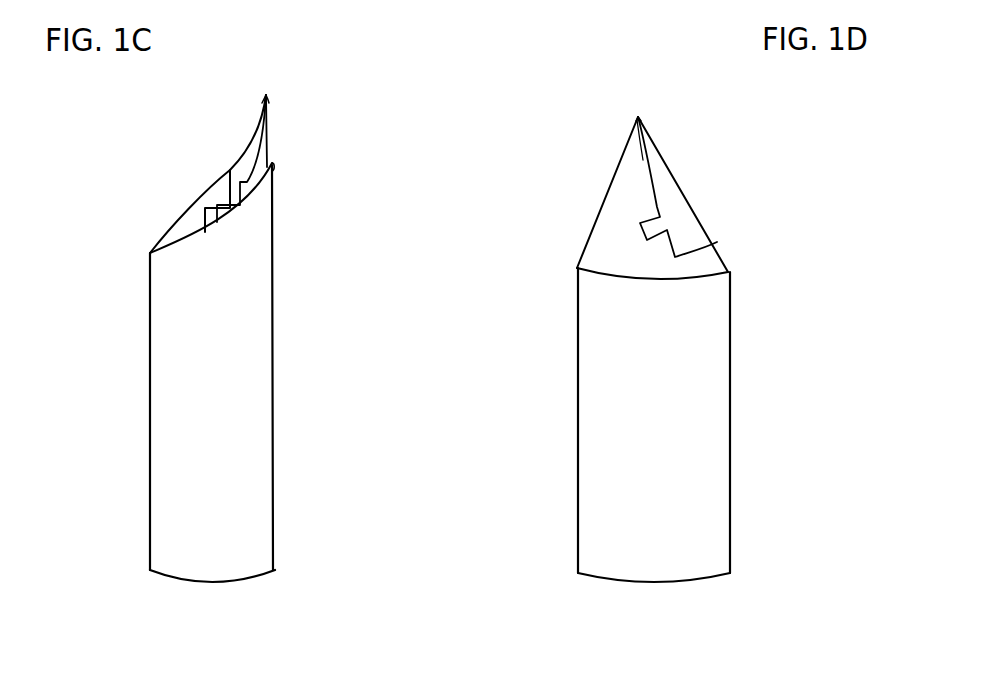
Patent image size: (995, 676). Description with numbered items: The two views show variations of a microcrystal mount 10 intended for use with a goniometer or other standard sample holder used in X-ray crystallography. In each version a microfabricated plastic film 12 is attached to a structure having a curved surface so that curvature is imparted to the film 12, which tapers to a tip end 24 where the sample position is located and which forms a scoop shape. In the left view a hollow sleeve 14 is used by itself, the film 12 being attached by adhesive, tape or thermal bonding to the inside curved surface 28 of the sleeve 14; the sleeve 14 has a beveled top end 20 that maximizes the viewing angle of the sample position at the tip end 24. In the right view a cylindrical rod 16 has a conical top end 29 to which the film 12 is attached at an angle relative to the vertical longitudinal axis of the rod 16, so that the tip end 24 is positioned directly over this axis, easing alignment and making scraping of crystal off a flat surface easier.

In FIG. 1C, the microcrystal mount 10 is at (356, 346).
In FIG. 1D, the microcrystal mount 10 is at (814, 343).
In FIG. 1C, the microfabricated plastic film 12 is at (290, 103).
In FIG. 1D, the microfabricated plastic film 12 is at (603, 117).
In FIG. 1C, the hollow sleeve 14 is at (136, 410).
In FIG. 1D, the rod 16 is at (713, 460).
In FIG. 1C, the beveled top end 20 is at (290, 174).
In FIG. 1C, the tip end 24 is at (267, 90).
In FIG. 1D, the tip end 24 is at (638, 117).
In FIG. 1C, the inside curved surface 28 is at (170, 233).
In FIG. 1D, the conical top end 29 is at (627, 202).